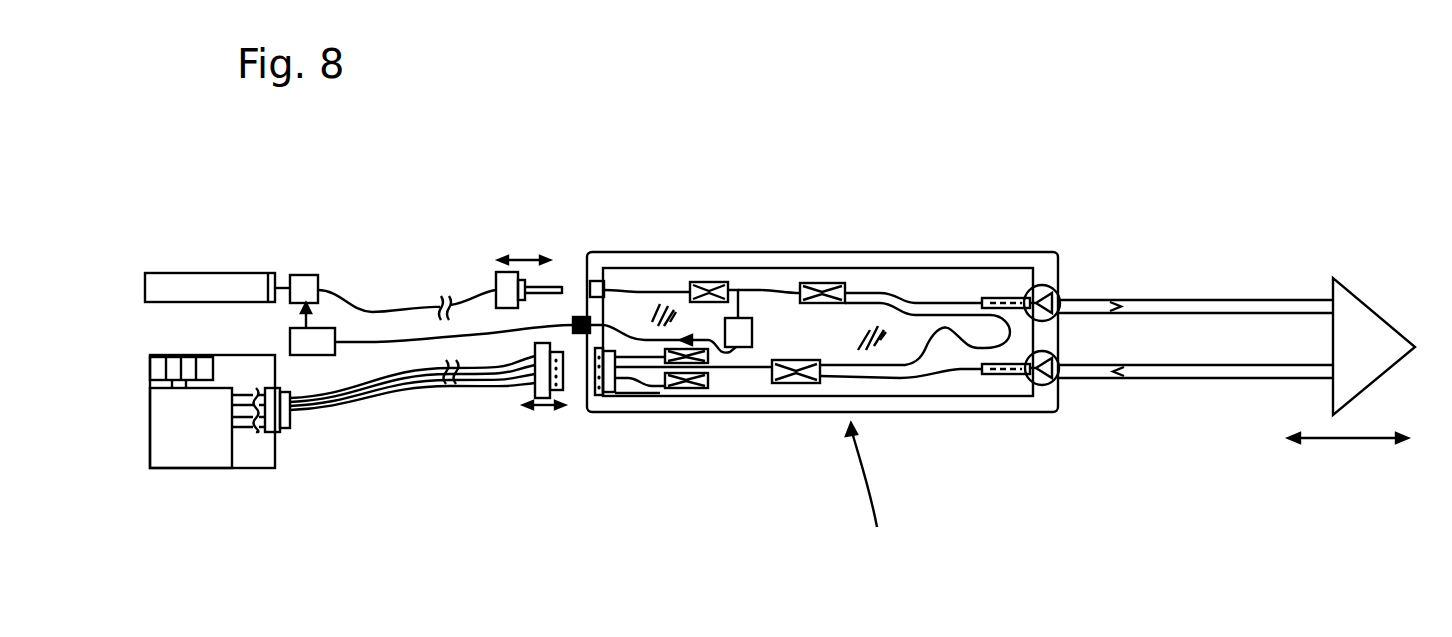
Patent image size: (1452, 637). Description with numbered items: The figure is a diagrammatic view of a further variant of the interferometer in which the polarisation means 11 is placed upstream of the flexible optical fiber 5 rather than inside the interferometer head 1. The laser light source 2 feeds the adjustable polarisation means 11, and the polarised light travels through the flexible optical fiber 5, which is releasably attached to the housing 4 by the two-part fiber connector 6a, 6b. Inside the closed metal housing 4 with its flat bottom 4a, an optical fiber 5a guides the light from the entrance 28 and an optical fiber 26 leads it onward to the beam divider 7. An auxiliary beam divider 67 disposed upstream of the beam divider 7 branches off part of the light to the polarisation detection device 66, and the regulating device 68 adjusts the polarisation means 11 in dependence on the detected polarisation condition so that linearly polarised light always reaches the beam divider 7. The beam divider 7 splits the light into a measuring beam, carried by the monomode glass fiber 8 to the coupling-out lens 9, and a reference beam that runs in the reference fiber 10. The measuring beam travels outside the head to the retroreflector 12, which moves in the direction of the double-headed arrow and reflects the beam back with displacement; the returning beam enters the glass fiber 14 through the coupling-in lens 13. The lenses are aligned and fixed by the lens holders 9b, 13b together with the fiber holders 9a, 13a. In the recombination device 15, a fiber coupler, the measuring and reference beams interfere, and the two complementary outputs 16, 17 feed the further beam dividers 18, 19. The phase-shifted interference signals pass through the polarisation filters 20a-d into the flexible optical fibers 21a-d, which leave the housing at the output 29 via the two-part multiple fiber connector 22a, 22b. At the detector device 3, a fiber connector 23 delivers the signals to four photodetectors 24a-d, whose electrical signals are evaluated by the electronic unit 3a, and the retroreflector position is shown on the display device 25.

The interferometer head 1 is at (867, 495).
The laser light source 2 is at (195, 283).
The photoelectric detector and evaluation device 3 is at (150, 417).
The electronic unit 3a is at (195, 445).
The housing 4 is at (720, 262).
The flat bottom 4a is at (786, 266).
The flexible optical fiber 5 is at (473, 290).
The optical fiber 5a is at (640, 264).
The fiber connector part 6a is at (495, 272).
The fiber connector part 6b is at (588, 250).
The beam divider 7 is at (836, 262).
The monomode glass fiber 8 is at (878, 265).
The coupling-out lens 9 is at (1060, 282).
The fiber holder 9a is at (1000, 297).
The lens holder 9b is at (1057, 253).
The reference fiber 10 is at (937, 330).
The polarisation means 11 is at (303, 275).
The retroreflector 12 is at (1362, 330).
The coupling-in lens 13 is at (1046, 386).
The fiber holder 13a is at (1003, 378).
The lens holder 13b is at (1056, 392).
The glass fiber 14 is at (922, 380).
The recombination device 15 is at (800, 384).
The complementary output 16 is at (722, 369).
The complementary output 17 is at (740, 369).
The beam divider 18 is at (684, 390).
The beam divider 19 is at (690, 365).
The polarisation filters 20a-d is at (612, 350).
The flexible optical fibers 21a-d is at (462, 388).
The multiple fiber connector part 22a is at (533, 393).
The multiple fiber connector part 22b is at (581, 410).
The fiber connector 23 is at (287, 430).
The photodetectors 24a-d is at (254, 438).
The display device 25 is at (152, 358).
The optical fiber 26 is at (806, 283).
The entrance 28 is at (627, 265).
The output 29 is at (598, 392).
The polarisation detection device 66 is at (745, 318).
The auxiliary beam divider 67 is at (708, 282).
The regulating device 68 is at (322, 337).